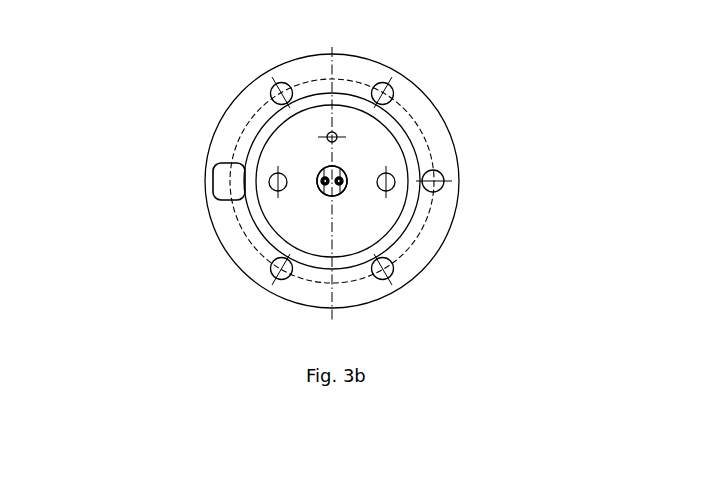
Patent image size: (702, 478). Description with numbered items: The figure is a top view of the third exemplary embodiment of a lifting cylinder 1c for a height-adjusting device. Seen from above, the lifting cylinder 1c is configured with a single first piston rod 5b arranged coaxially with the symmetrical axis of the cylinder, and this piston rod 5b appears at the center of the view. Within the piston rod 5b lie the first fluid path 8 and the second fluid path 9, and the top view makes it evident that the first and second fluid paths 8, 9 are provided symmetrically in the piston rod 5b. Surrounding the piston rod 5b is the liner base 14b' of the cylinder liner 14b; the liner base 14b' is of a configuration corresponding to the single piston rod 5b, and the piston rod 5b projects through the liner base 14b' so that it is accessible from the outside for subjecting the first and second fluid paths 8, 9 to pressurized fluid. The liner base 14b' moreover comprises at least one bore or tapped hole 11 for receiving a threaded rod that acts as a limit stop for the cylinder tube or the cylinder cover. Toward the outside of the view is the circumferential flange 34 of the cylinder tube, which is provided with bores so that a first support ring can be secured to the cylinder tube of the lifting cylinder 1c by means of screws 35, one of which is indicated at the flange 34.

The lifting cylinder 1c is at (100, 23).
The first piston rod 5b is at (316, 172).
The first fluid path 8 is at (308, 186).
The second fluid path 9 is at (345, 190).
The bore or tapped hole 11 is at (316, 172).
The cylinder liner 14b is at (396, 189).
The liner base 14b' is at (389, 150).
The circumferential flange 34 is at (440, 148).
The screws 35 is at (225, 173).